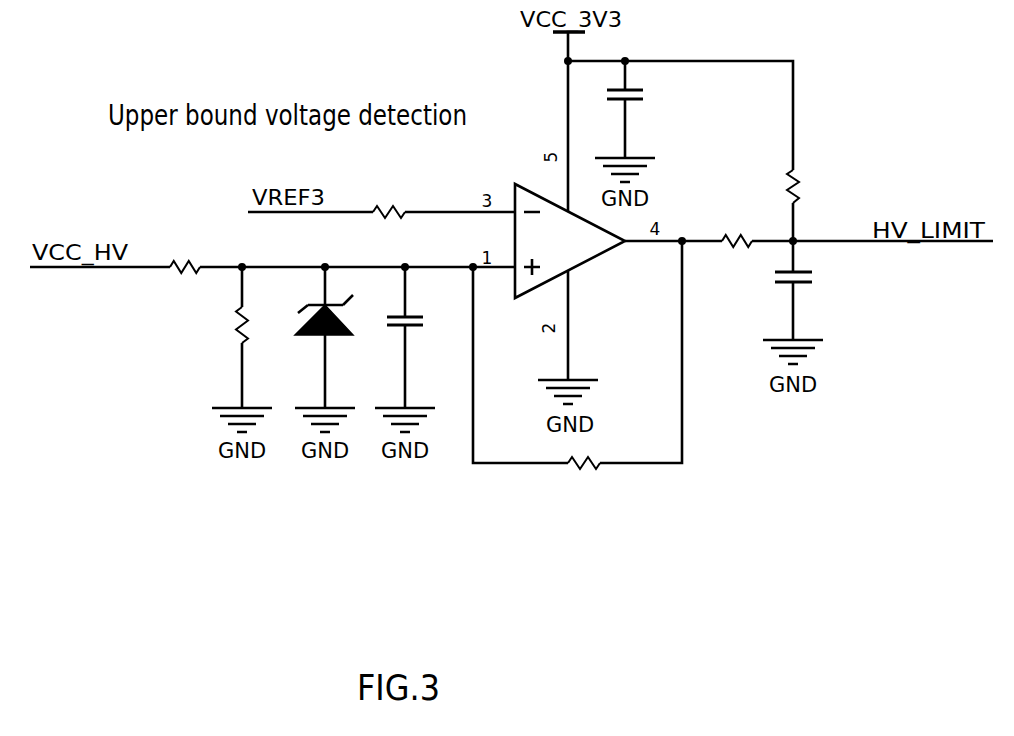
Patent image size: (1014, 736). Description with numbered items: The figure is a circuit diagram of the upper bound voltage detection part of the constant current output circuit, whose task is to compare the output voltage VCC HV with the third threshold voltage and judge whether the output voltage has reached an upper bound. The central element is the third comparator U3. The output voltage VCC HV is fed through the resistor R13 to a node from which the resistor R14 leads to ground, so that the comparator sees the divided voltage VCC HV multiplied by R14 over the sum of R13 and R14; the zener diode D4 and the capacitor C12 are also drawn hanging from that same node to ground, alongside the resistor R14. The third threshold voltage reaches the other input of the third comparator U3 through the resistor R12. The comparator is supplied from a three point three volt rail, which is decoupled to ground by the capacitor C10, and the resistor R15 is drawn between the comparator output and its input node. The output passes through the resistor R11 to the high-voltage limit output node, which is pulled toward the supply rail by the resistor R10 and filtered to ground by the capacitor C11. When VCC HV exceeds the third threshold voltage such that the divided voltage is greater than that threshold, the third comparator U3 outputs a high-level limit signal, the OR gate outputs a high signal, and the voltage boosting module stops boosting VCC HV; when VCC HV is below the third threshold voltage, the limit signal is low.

The third comparator U3 is at (562, 216).
The pull-up resistor R10 is at (815, 205).
The output series resistor R11 is at (729, 228).
The reference input resistor R12 is at (369, 224).
The resistor R13 is at (201, 256).
The resistor R14 is at (262, 337).
The feedback resistor R15 is at (564, 454).
The supply decoupling capacitor C10 is at (648, 109).
The output filter capacitor C11 is at (814, 290).
The input filter capacitor C12 is at (427, 337).
The zener clamp diode D4 is at (340, 337).